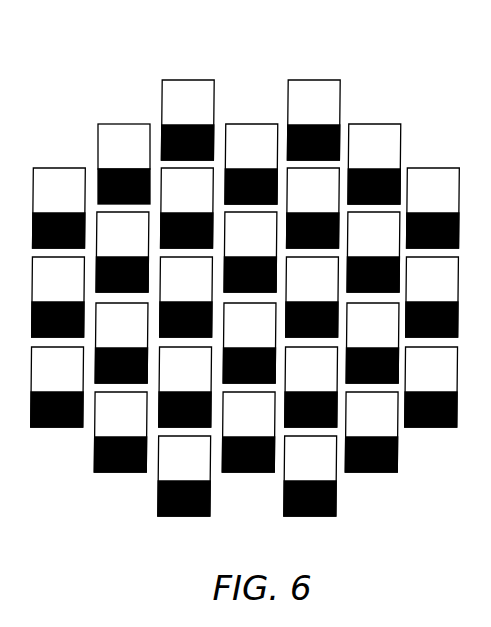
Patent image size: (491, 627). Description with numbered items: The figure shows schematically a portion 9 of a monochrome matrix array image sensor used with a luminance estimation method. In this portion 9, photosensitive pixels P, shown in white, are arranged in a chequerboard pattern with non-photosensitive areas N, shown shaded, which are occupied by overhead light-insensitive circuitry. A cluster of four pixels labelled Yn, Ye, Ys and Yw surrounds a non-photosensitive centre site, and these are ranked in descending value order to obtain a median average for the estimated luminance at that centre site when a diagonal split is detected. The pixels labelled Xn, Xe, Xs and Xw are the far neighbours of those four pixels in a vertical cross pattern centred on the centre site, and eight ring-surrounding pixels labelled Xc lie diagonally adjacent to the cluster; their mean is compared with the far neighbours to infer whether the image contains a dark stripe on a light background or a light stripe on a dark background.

The portion of a monochrome sensor array 9 is at (354, 115).
The photosensitive pixels P is at (111, 148).
The non-photosensitive areas N is at (119, 187).